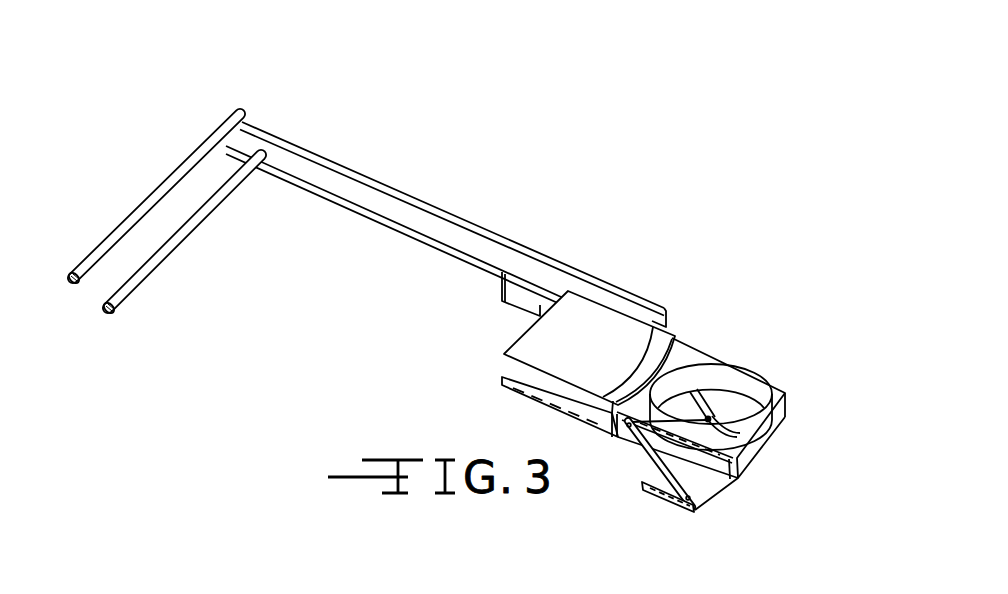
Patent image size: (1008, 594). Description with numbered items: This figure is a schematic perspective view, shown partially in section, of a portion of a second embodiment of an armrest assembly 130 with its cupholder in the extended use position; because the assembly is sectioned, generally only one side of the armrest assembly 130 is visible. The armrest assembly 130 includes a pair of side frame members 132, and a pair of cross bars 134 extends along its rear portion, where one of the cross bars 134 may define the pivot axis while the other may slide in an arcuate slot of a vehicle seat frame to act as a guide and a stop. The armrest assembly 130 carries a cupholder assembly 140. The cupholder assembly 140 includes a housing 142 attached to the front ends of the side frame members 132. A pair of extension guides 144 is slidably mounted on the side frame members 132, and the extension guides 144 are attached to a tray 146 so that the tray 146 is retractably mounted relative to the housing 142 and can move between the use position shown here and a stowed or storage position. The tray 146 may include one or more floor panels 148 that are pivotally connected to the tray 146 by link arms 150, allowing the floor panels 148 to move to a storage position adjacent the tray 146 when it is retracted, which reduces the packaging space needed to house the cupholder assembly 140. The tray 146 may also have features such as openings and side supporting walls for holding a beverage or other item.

The armrest assembly 130 is at (472, 108).
The side frame members 132 is at (422, 197).
The cross bars 134 is at (162, 166).
The cupholder assembly 140 is at (838, 373).
The housing 142 is at (606, 349).
The extension guides 144 is at (537, 311).
The tray 146 is at (678, 363).
The floor panels 148 is at (693, 482).
The link arms 150 is at (632, 424).